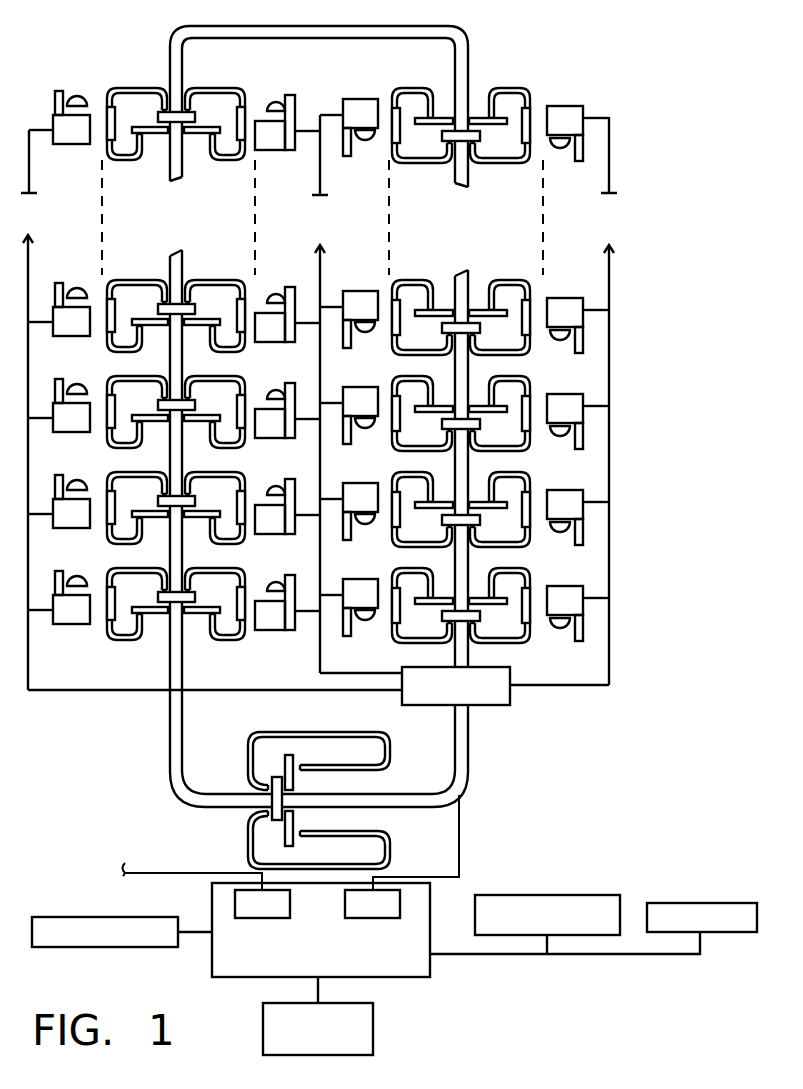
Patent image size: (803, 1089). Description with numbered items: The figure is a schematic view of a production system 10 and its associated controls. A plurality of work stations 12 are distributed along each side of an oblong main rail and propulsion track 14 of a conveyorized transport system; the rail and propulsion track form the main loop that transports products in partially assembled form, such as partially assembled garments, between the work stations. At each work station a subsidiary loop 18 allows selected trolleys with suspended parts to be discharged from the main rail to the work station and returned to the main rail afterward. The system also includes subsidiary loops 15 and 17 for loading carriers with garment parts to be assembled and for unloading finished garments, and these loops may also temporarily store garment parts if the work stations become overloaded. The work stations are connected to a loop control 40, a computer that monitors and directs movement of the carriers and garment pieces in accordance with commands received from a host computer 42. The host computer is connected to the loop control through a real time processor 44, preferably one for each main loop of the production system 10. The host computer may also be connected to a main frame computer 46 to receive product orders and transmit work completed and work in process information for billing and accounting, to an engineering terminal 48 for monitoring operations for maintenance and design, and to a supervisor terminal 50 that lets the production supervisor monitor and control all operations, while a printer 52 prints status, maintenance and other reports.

The production system 10 is at (655, 172).
The work station 12 is at (53, 121).
The main rail and propulsion track 14 is at (310, 9).
The subsidiary loop 15 is at (248, 758).
The subsidiary loop 17 is at (248, 843).
The subsidiary loop 18 is at (148, 86).
The loop control 40 is at (487, 707).
The host computer 42 is at (405, 978).
The real time processor 44 is at (250, 918).
The main frame computer 46 is at (137, 948).
The engineering terminal 48 is at (373, 1025).
The supervisor terminal 50 is at (555, 895).
The printer 52 is at (703, 903).